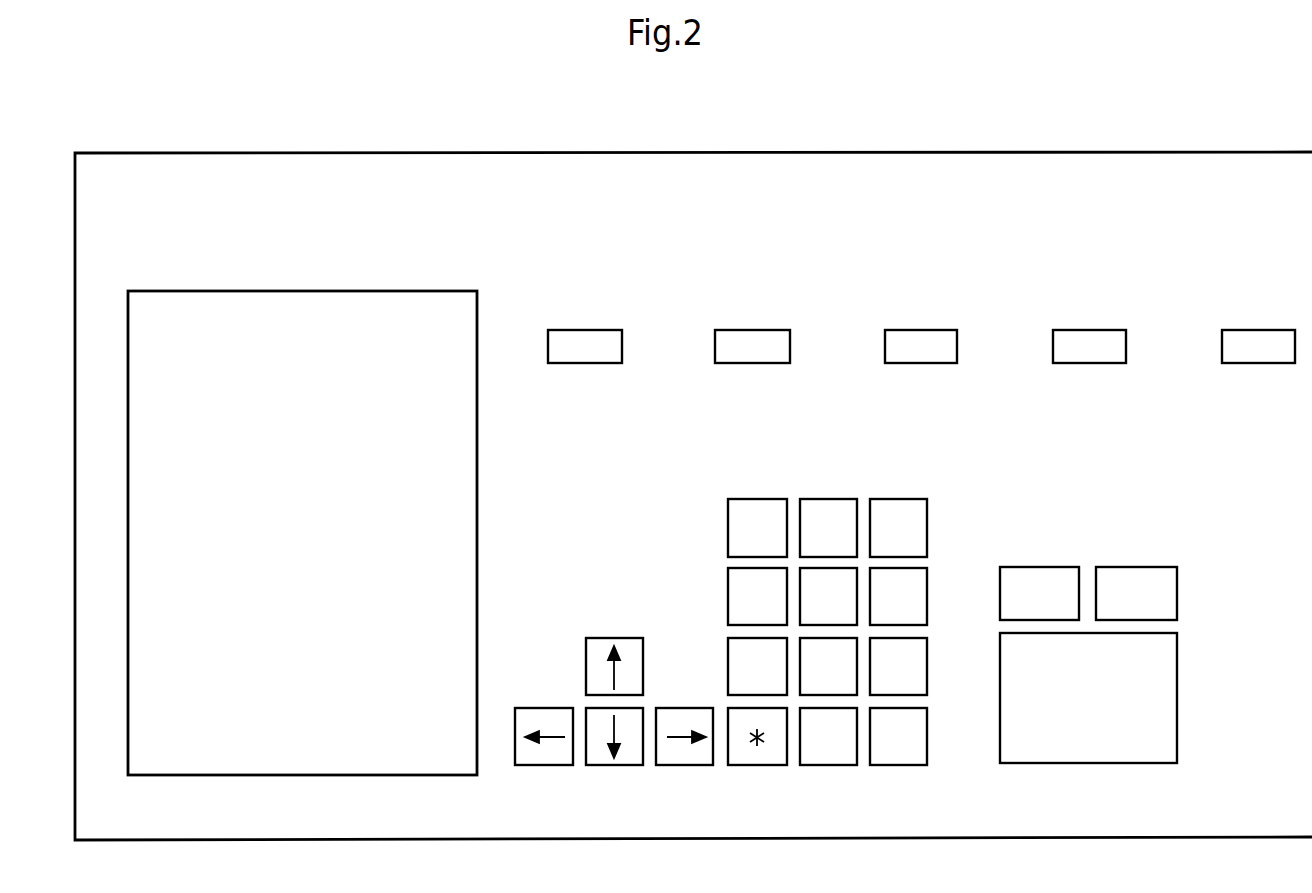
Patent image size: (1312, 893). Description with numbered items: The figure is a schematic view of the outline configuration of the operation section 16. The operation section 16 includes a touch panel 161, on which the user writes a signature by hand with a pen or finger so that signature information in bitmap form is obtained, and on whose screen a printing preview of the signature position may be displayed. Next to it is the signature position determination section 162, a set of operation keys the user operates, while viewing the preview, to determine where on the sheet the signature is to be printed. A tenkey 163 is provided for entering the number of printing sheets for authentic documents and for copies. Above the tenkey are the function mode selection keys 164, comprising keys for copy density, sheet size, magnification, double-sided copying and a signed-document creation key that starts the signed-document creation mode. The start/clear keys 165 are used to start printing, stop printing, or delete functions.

The operation section 16 is at (972, 160).
The touch panel 161 is at (149, 776).
The signature position determination section 162 is at (713, 775).
The tenkey 163 is at (927, 775).
The function mode selection keys 164 is at (1307, 314).
The start/clear keys 165 is at (988, 571).